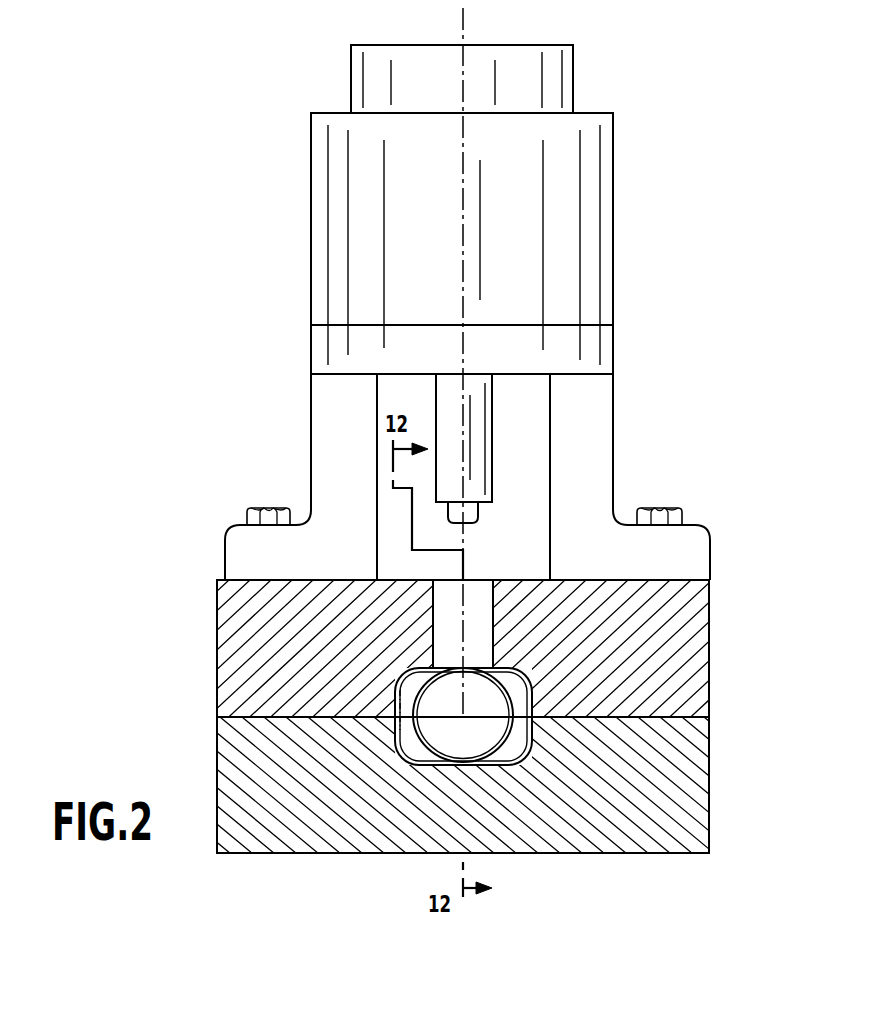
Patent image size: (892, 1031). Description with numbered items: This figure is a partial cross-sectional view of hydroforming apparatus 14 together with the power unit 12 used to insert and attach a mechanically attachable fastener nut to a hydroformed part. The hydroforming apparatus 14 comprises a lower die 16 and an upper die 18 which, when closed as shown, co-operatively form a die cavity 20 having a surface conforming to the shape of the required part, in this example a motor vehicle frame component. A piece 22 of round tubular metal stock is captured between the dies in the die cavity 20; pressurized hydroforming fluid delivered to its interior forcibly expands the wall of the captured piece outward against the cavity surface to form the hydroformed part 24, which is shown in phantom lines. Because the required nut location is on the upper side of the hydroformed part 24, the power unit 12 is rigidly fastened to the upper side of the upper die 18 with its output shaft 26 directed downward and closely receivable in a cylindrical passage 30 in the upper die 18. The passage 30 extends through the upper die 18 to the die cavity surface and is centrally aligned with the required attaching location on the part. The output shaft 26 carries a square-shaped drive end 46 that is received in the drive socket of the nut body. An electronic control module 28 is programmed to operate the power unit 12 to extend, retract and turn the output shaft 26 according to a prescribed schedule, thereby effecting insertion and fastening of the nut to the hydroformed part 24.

The power unit 12 is at (615, 220).
The hydroforming apparatus 14 is at (205, 572).
The lower die 16 is at (710, 833).
The upper die 18 is at (710, 671).
The die cavity 20 is at (526, 694).
The piece of round tubular metal stock 22 is at (505, 745).
The hydroformed part 24 is at (525, 672).
The output shaft 26 is at (490, 432).
The electronic control module 28 is at (574, 82).
The cylindrical passage 30 is at (498, 617).
The square-shaped drive end 46 is at (480, 515).